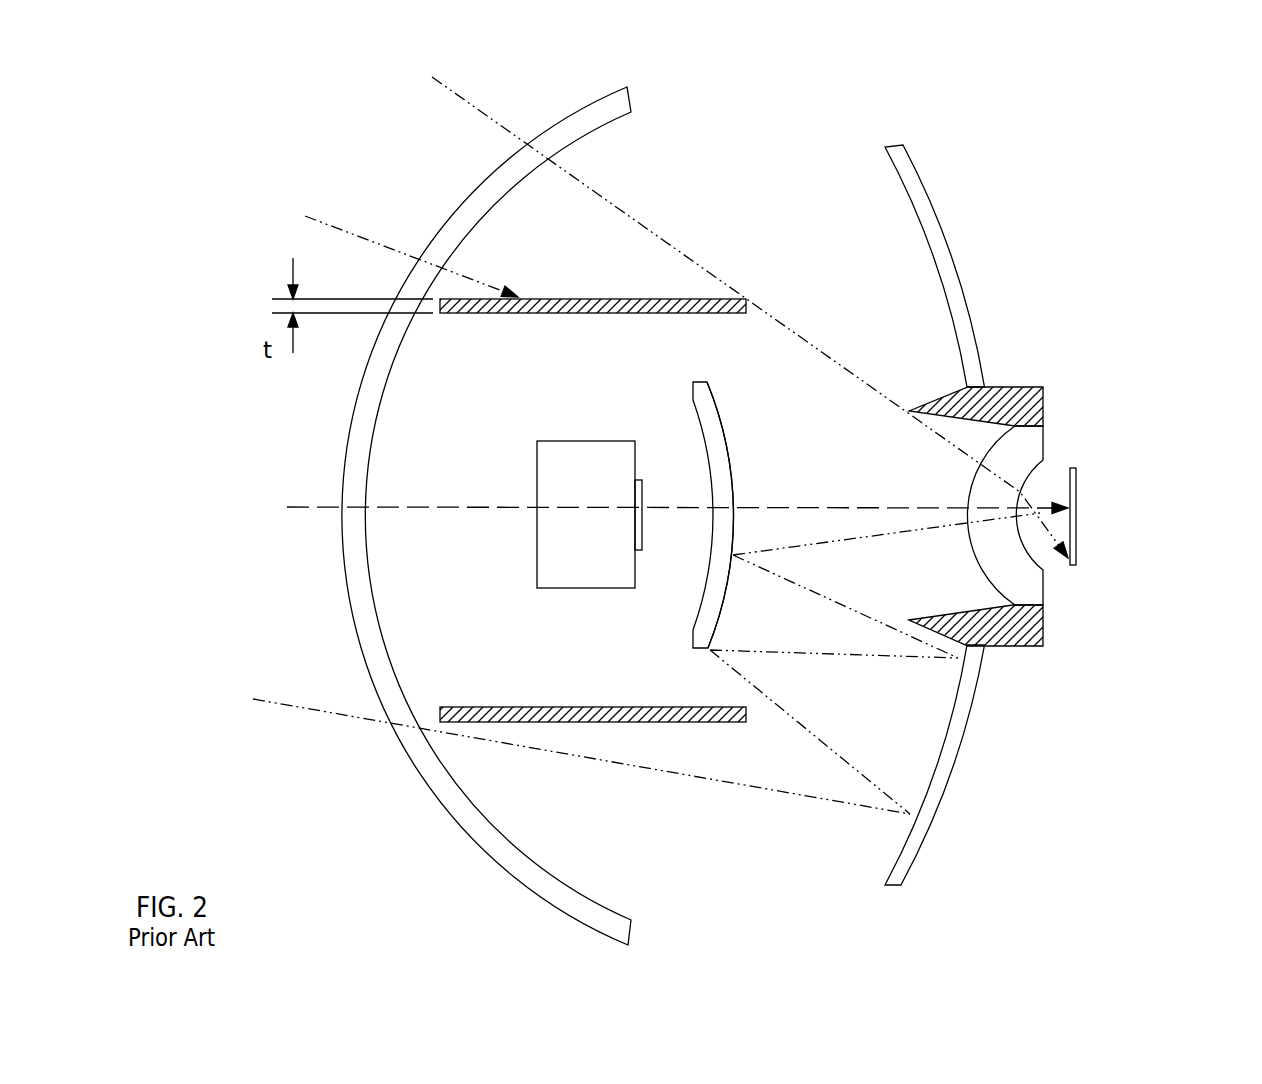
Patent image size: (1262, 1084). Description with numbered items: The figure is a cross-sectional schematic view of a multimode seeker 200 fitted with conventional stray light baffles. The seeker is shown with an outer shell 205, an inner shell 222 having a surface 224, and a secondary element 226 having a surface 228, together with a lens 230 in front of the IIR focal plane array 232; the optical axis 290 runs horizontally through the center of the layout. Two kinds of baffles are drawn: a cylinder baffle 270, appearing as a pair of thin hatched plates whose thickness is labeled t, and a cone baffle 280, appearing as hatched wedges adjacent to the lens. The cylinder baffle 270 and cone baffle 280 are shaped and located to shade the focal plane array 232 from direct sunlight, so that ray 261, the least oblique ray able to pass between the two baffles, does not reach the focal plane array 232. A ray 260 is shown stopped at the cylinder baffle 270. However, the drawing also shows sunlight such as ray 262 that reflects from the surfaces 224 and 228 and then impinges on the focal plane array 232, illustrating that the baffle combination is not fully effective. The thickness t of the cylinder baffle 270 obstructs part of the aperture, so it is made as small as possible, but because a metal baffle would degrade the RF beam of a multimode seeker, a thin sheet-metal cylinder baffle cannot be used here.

The multimode seeker 200 is at (1047, 115).
The transparent dome / window shell 205 is at (565, 117).
The outer lens shell 222 is at (932, 203).
The surface 224 is at (953, 328).
The secondary mirror element 226 is at (693, 388).
The surface 228 is at (736, 479).
The focusing lens 230 is at (1044, 438).
The IIR focal plane array 232 is at (1078, 503).
The incoming ray 260 is at (350, 232).
The ray 261 is at (466, 98).
The ray 262 is at (315, 713).
The cylinder baffle 270 is at (542, 299).
The cone baffle 280 is at (1010, 387).
The optical axis 290 is at (336, 508).